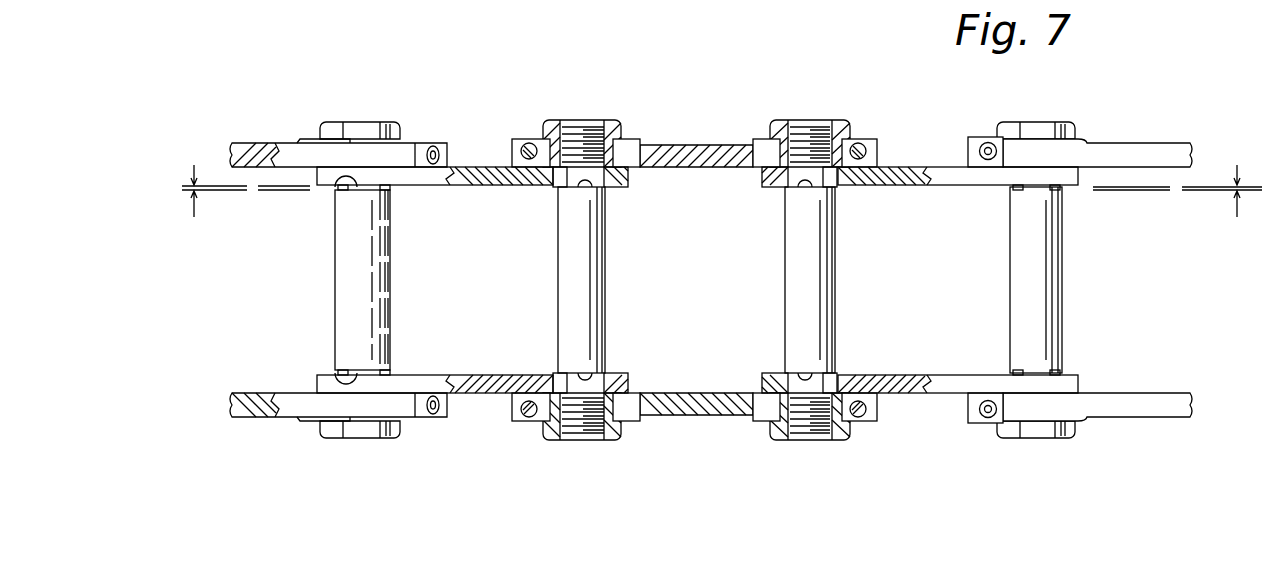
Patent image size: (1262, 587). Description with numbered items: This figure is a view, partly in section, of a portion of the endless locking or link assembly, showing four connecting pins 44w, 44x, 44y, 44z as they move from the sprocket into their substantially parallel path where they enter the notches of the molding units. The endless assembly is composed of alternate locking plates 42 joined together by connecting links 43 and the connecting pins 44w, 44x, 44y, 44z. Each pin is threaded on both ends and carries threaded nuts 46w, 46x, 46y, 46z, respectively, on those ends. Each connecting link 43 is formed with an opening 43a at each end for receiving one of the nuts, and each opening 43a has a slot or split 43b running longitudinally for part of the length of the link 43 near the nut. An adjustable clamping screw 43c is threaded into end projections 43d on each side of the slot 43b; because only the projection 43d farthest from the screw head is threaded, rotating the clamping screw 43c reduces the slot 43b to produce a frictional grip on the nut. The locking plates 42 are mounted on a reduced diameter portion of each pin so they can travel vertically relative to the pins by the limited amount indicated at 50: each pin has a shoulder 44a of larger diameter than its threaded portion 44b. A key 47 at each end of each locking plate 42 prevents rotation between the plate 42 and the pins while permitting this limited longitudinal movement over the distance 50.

The locking plate 42 is at (470, 167).
The connecting link 43 is at (244, 143).
The opening 43a is at (572, 140).
The slot 43b is at (635, 148).
The clamping screw 43c is at (433, 145).
The end projection 43d is at (512, 152).
The shoulder 44a is at (340, 182).
The threaded portion 44b is at (590, 125).
The connecting pin 44w is at (372, 275).
The connecting pin 44x is at (600, 275).
The connecting pin 44y is at (820, 275).
The connecting pin 44z is at (1045, 275).
The threaded nut 46w is at (340, 122).
The threaded nut 46x is at (618, 128).
The threaded nut 46y is at (846, 126).
The threaded nut 46z is at (1035, 122).
The key 47 is at (388, 188).
The distance of limited vertical travel 50 is at (180, 188).